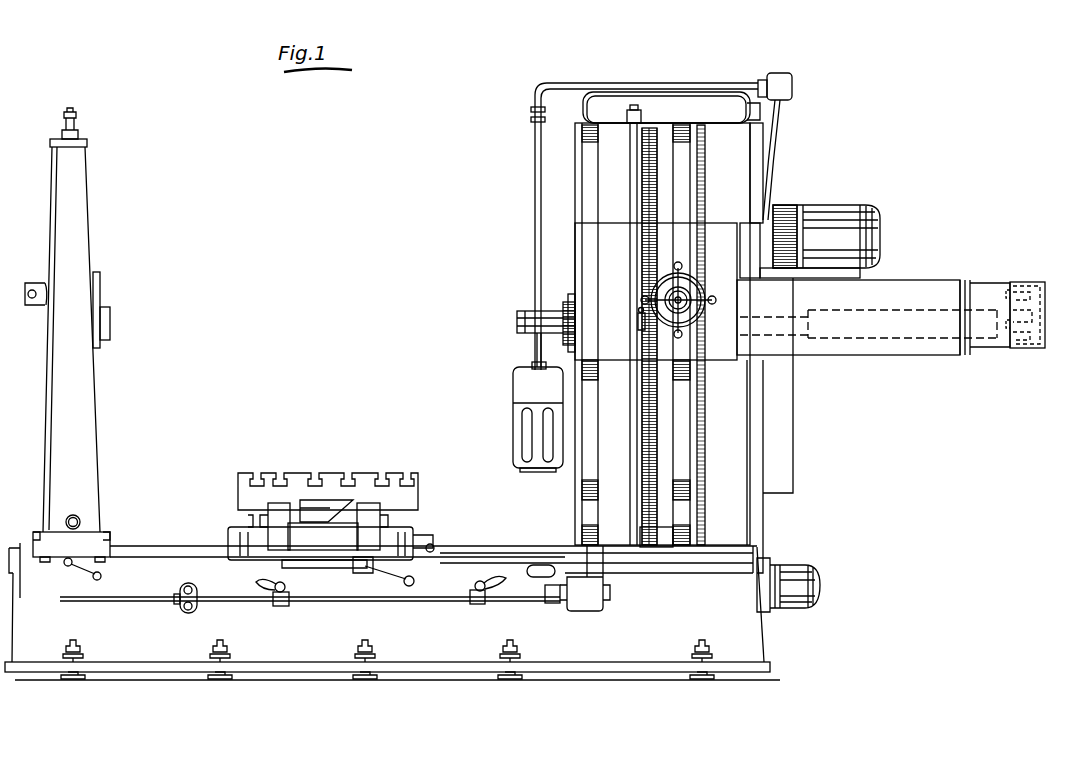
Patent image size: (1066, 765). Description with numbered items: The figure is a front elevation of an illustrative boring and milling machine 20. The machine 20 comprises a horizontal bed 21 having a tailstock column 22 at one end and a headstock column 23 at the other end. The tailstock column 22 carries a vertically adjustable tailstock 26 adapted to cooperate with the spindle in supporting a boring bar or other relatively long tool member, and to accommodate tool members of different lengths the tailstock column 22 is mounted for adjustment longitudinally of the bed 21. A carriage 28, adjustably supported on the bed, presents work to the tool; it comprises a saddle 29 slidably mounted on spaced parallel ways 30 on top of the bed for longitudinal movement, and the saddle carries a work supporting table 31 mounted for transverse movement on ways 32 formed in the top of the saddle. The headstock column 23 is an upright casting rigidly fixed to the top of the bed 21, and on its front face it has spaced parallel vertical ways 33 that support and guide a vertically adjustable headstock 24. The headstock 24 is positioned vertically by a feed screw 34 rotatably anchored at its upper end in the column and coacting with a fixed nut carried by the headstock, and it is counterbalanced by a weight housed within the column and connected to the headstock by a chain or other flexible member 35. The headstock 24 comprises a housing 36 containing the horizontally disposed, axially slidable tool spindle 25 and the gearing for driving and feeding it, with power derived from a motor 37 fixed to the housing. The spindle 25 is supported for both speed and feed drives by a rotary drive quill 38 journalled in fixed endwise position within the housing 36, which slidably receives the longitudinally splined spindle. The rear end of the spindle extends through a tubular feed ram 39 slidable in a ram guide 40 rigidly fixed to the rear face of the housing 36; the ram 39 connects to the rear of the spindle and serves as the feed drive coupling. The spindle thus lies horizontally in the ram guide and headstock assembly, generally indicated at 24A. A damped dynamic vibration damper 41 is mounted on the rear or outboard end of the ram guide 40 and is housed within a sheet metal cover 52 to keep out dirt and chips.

The machine 20 is at (838, 469).
The horizontal bed 21 is at (766, 641).
The tailstock column 22 is at (88, 208).
The headstock column 23 is at (580, 185).
The headstock 24 is at (573, 255).
The ram guide and headstock assembly 24A is at (897, 252).
The tool spindle 25 is at (525, 311).
The tailstock 26 is at (110, 312).
The carriage 28 is at (287, 468).
The saddle 29 is at (226, 534).
The ways 30 is at (139, 547).
The work supporting table 31 is at (418, 495).
The ways 32 is at (275, 510).
The vertical ways 33 is at (590, 476).
The feed screw 34 is at (658, 134).
The chain or other flexible member 35 is at (703, 204).
The housing 36 is at (705, 356).
The motor 37 is at (840, 204).
The rotary drive quill 38 is at (566, 312).
The tubular feed ram 39 is at (872, 340).
The ram guide 40 is at (919, 280).
The damped dynamic vibration damper 41 is at (1037, 277).
The sheet metal cover 52 is at (1031, 348).